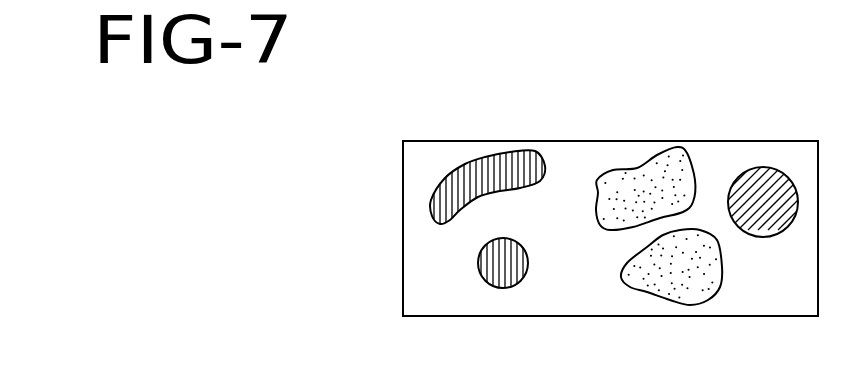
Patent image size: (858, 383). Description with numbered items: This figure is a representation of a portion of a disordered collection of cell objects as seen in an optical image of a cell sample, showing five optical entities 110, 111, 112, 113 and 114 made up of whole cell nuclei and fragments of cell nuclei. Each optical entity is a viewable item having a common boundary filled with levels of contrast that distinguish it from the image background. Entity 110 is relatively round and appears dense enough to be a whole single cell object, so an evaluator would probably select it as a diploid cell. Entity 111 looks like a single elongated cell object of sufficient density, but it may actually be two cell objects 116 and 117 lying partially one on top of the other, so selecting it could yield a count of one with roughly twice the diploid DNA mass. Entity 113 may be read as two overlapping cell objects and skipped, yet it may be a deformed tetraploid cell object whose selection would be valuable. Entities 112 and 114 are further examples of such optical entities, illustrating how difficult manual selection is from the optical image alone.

The optical entity 110 is at (485, 287).
The optical entity 111 is at (468, 156).
The optical entity 112 is at (652, 156).
The optical entity 113 is at (713, 298).
The optical entity 114 is at (777, 168).
The cell object 116 is at (450, 220).
The cell object 117 is at (538, 184).